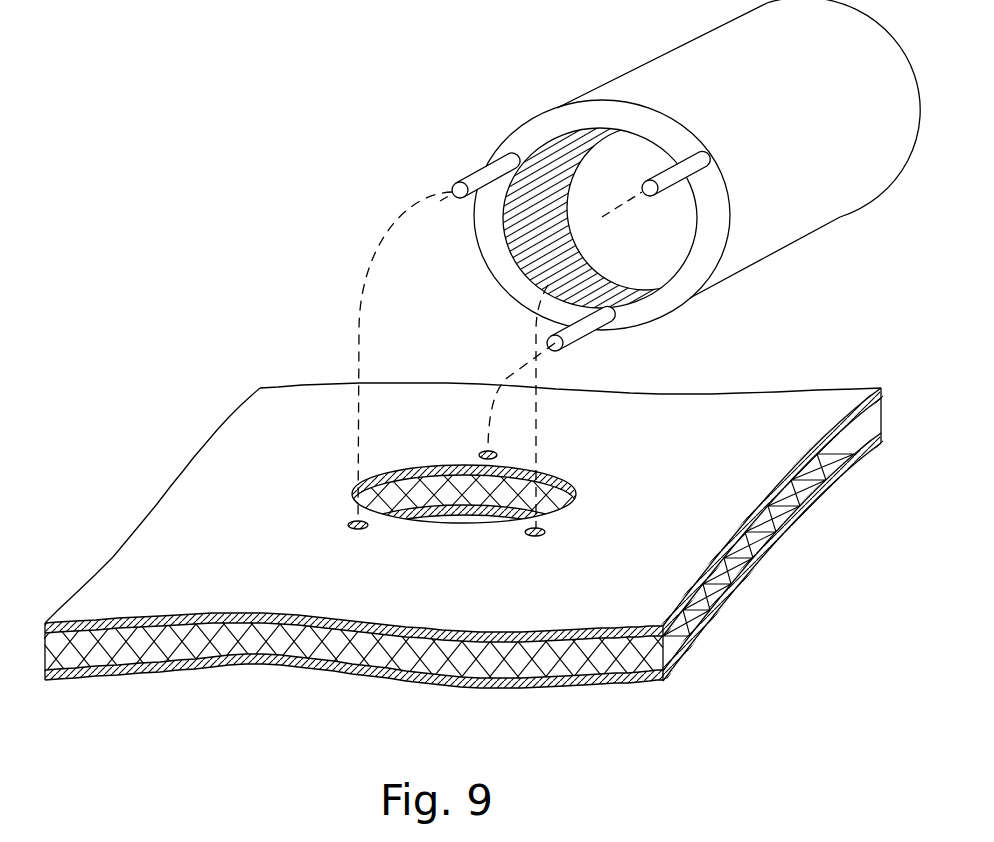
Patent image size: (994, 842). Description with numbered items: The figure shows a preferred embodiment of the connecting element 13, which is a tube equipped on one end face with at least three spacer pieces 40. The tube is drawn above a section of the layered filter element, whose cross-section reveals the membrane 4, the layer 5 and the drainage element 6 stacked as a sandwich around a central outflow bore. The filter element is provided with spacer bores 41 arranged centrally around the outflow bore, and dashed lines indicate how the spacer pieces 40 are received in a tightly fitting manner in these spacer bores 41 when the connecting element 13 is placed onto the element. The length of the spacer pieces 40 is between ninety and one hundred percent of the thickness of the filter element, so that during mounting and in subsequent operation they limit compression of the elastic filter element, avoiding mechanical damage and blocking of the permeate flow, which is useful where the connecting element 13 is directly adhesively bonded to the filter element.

The membrane 4 is at (813, 498).
The core layer of sandwich panel 5 is at (780, 548).
The drainage element 6 is at (700, 647).
The connecting element 13 is at (805, 211).
The spacer pieces 40 is at (680, 173).
The spacer bores 41 is at (497, 456).